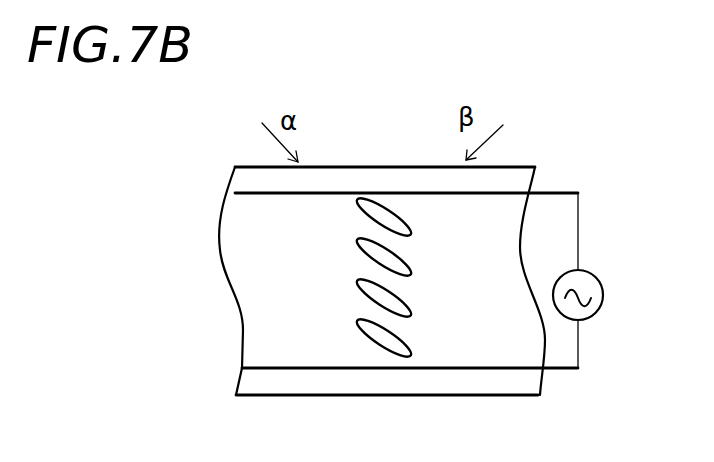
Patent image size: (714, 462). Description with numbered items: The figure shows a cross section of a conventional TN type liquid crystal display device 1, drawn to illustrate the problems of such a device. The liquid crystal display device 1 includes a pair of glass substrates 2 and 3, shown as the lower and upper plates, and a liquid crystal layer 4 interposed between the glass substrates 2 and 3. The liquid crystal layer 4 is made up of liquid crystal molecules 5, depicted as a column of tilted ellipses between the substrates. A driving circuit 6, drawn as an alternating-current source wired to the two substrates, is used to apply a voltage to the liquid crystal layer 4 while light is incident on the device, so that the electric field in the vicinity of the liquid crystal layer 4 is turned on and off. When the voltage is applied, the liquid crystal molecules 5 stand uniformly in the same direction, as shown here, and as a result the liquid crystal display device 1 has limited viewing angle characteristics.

The liquid crystal display device 1 is at (254, 409).
The glass substrate 2 is at (475, 384).
The glass substrate 3 is at (394, 154).
The liquid crystal layer 4 is at (262, 317).
The liquid crystal molecules 5 is at (404, 262).
The driving circuit 6 is at (597, 306).